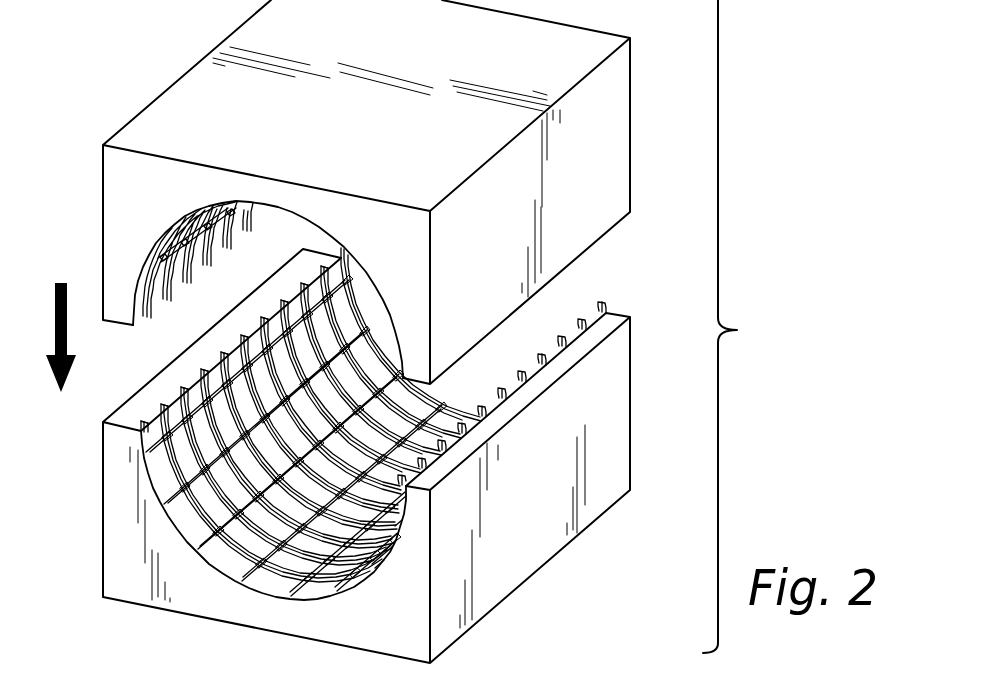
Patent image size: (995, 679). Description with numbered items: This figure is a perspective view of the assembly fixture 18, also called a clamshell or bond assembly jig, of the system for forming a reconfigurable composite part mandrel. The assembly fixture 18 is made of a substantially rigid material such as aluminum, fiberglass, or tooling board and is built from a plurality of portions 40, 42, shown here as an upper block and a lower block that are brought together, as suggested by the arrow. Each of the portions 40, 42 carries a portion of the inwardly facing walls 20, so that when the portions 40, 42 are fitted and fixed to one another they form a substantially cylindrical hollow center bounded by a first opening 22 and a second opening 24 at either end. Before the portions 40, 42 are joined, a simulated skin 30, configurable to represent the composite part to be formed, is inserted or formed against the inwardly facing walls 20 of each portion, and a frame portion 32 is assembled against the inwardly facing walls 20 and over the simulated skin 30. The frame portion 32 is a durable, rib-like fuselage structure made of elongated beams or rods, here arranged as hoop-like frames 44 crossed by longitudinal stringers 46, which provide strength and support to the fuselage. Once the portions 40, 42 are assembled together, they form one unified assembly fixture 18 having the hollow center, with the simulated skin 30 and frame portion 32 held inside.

The assembly fixture 18 is at (741, 326).
The inwardly facing walls 20 is at (287, 557).
The first opening 22 is at (318, 224).
The second opening 24 is at (360, 325).
The simulated skin 30 is at (208, 567).
The frame portion 32 is at (160, 518).
The portion of the assembly fixture 40 is at (622, 373).
The portion of the assembly fixture 42 is at (610, 157).
The frames 44 is at (165, 280).
The stringers 46 is at (147, 276).